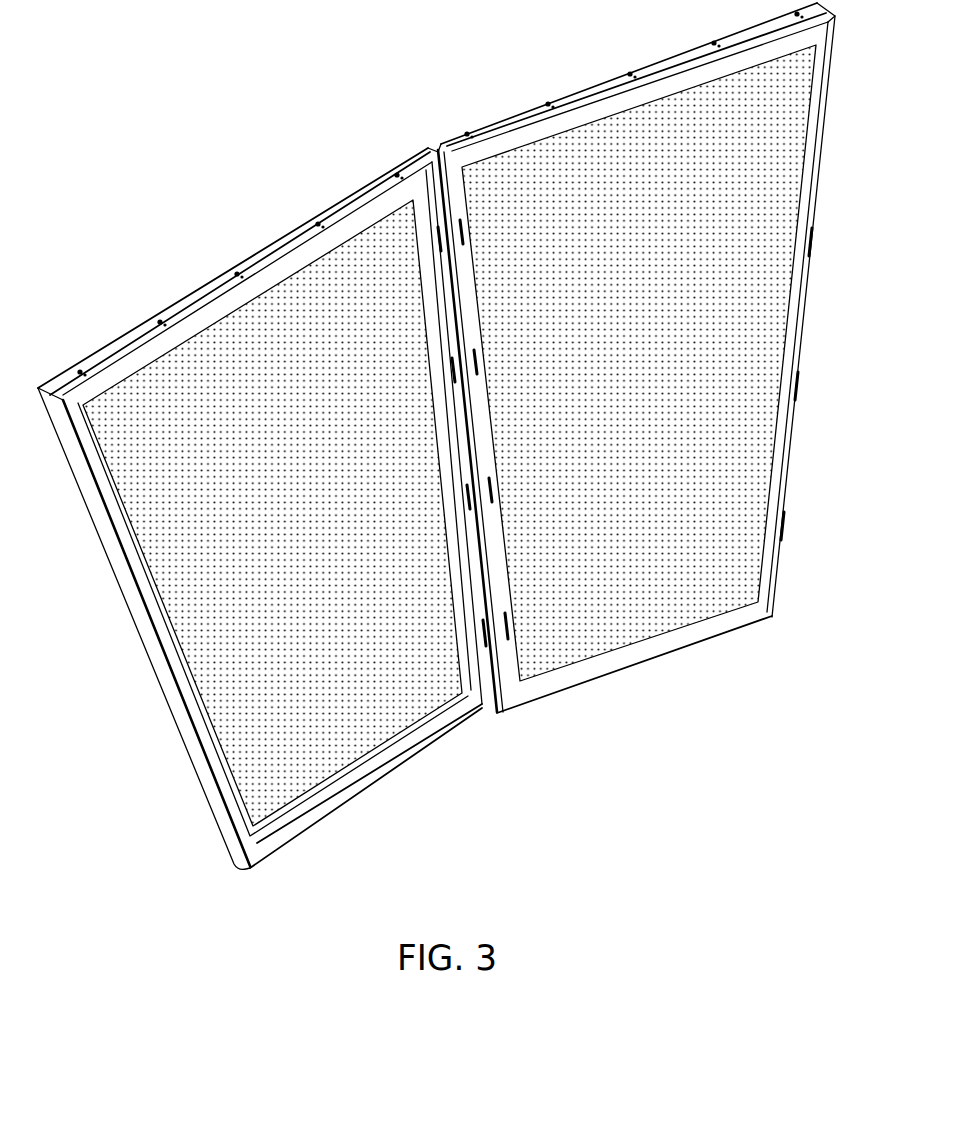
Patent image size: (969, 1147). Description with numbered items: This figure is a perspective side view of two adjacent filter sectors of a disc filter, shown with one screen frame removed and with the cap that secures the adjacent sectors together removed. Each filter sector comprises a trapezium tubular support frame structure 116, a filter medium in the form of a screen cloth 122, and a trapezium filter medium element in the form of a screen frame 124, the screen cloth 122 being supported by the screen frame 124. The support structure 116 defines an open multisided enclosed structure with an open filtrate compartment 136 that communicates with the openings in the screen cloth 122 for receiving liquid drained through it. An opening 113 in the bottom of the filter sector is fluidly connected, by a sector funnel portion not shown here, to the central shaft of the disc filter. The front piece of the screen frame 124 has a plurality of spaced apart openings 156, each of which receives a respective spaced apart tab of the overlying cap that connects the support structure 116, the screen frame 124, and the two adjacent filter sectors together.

The opening 113 is at (398, 748).
The trapezium tubular support frame structure 116 is at (337, 805).
The screen cloth 122 is at (583, 190).
The screen frame 124 is at (768, 583).
The filtrate compartment 136 is at (260, 528).
The spaced apart openings 156 is at (800, 388).